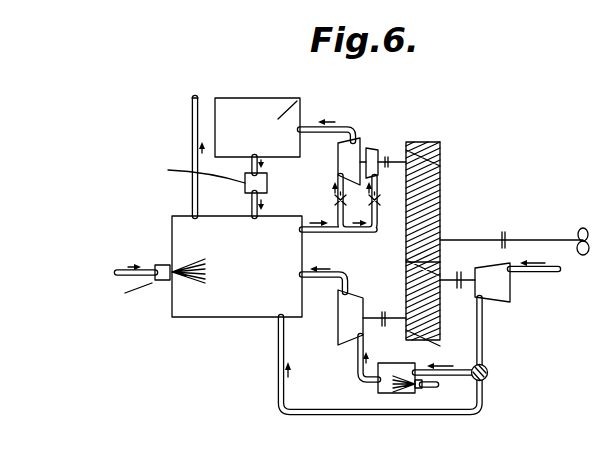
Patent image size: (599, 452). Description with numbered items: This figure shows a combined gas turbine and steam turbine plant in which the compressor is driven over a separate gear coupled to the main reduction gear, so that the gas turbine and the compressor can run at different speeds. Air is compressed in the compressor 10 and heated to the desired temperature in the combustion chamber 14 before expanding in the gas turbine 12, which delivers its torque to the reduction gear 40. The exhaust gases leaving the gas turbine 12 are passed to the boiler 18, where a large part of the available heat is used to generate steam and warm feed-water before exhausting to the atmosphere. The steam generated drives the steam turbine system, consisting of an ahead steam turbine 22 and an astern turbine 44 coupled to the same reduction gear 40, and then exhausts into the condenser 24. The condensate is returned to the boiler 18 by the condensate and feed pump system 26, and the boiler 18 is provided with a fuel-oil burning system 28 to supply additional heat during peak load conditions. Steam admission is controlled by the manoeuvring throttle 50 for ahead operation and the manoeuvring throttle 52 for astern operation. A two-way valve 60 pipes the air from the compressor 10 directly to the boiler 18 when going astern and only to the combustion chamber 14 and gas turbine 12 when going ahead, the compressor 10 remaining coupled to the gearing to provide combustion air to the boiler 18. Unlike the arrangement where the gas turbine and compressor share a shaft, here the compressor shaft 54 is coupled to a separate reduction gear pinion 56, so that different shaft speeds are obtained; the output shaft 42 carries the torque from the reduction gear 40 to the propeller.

The compressor 10 is at (500, 292).
The gas turbine 12 is at (344, 308).
The combustion chamber 14 is at (395, 363).
The boiler 18 is at (218, 226).
The steam turbine 22 is at (340, 153).
The condenser 24 is at (280, 102).
The condensate and feed pump system 26 is at (268, 184).
The fuel-oil burning system 28 is at (162, 265).
The reduction gear 40 is at (436, 214).
The propeller shaft 42 is at (538, 238).
The astern turbine 44 is at (370, 150).
The manoeuvring throttle 50 is at (335, 200).
The manoeuvring throttle 52 is at (376, 200).
The compressor shaft 54 is at (449, 276).
The reduction gear pinion 56 is at (406, 272).
The two-way valve 60 is at (488, 371).